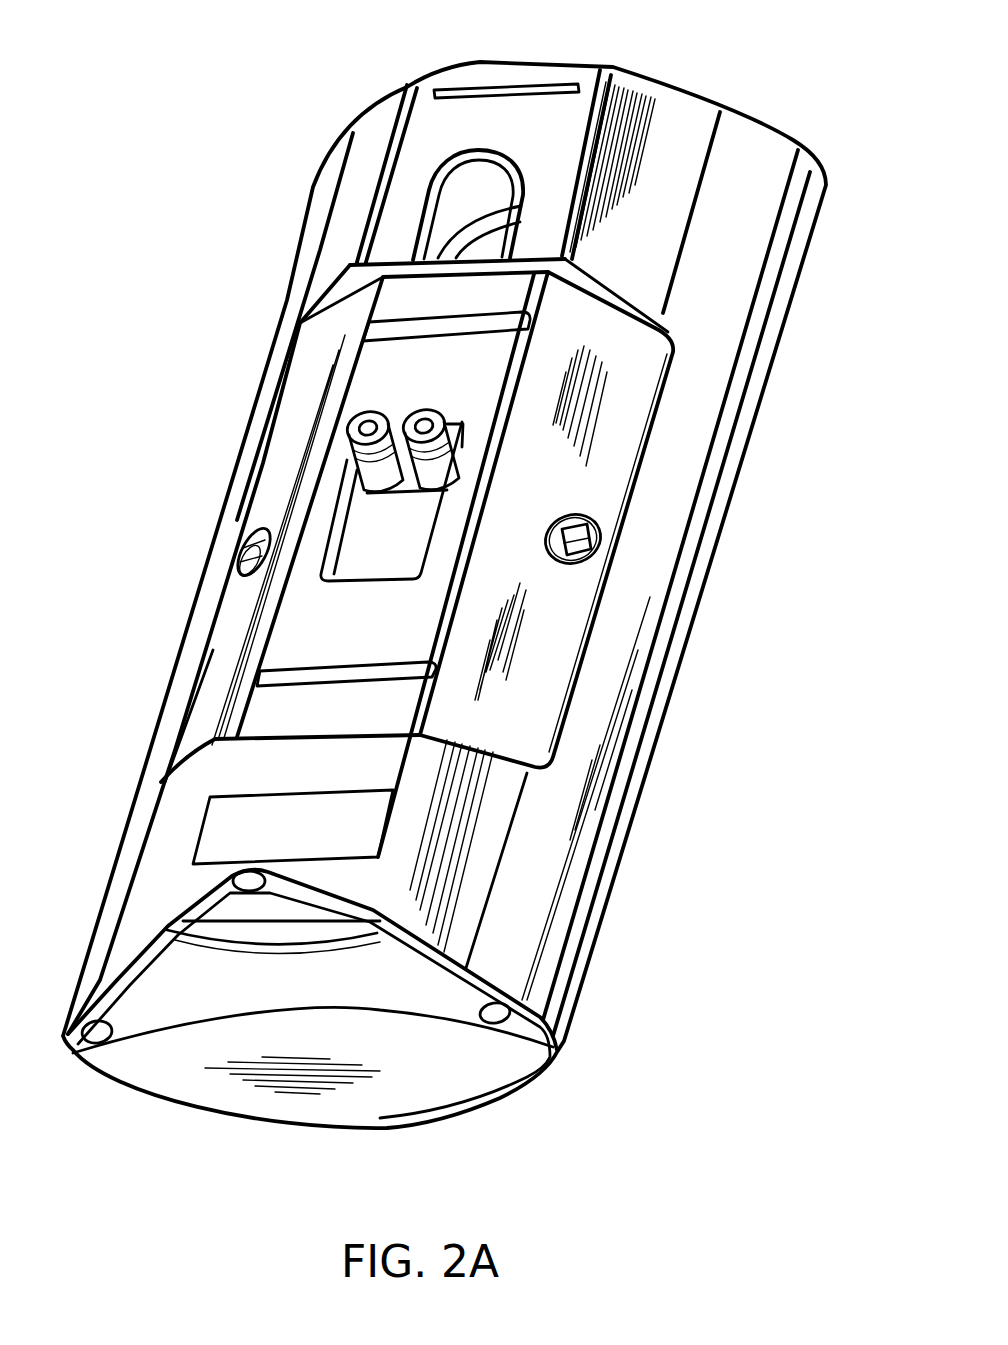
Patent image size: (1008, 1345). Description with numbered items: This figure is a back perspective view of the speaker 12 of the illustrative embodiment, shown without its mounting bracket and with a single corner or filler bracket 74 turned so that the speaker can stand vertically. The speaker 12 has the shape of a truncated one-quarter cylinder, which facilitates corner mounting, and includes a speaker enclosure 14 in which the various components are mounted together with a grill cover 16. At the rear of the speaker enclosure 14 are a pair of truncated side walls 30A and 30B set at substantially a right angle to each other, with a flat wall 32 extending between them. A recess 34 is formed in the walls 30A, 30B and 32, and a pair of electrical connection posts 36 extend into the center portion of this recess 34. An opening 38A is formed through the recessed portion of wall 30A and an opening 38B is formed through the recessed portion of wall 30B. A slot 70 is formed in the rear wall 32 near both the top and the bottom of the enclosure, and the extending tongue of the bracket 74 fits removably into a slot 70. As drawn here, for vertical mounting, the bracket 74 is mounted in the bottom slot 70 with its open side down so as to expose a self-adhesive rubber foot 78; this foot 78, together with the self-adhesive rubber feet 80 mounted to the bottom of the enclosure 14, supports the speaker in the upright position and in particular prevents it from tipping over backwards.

The speaker 12 is at (122, 436).
The speaker enclosure 14 is at (590, 794).
The grill cover 16 is at (423, 1107).
The truncated side wall 30A is at (373, 123).
The truncated side wall 30B is at (667, 103).
The flat wall 32 is at (520, 77).
The recess 34 is at (643, 367).
The electrical connection posts 36 is at (423, 410).
The opening 38A is at (257, 533).
The opening 38B is at (603, 540).
The slot 70 is at (467, 90).
The corner or filler bracket 74 is at (357, 897).
The self-adhesive rubber foot 78 is at (253, 893).
The self-adhesive rubber feet 80 is at (118, 1022).